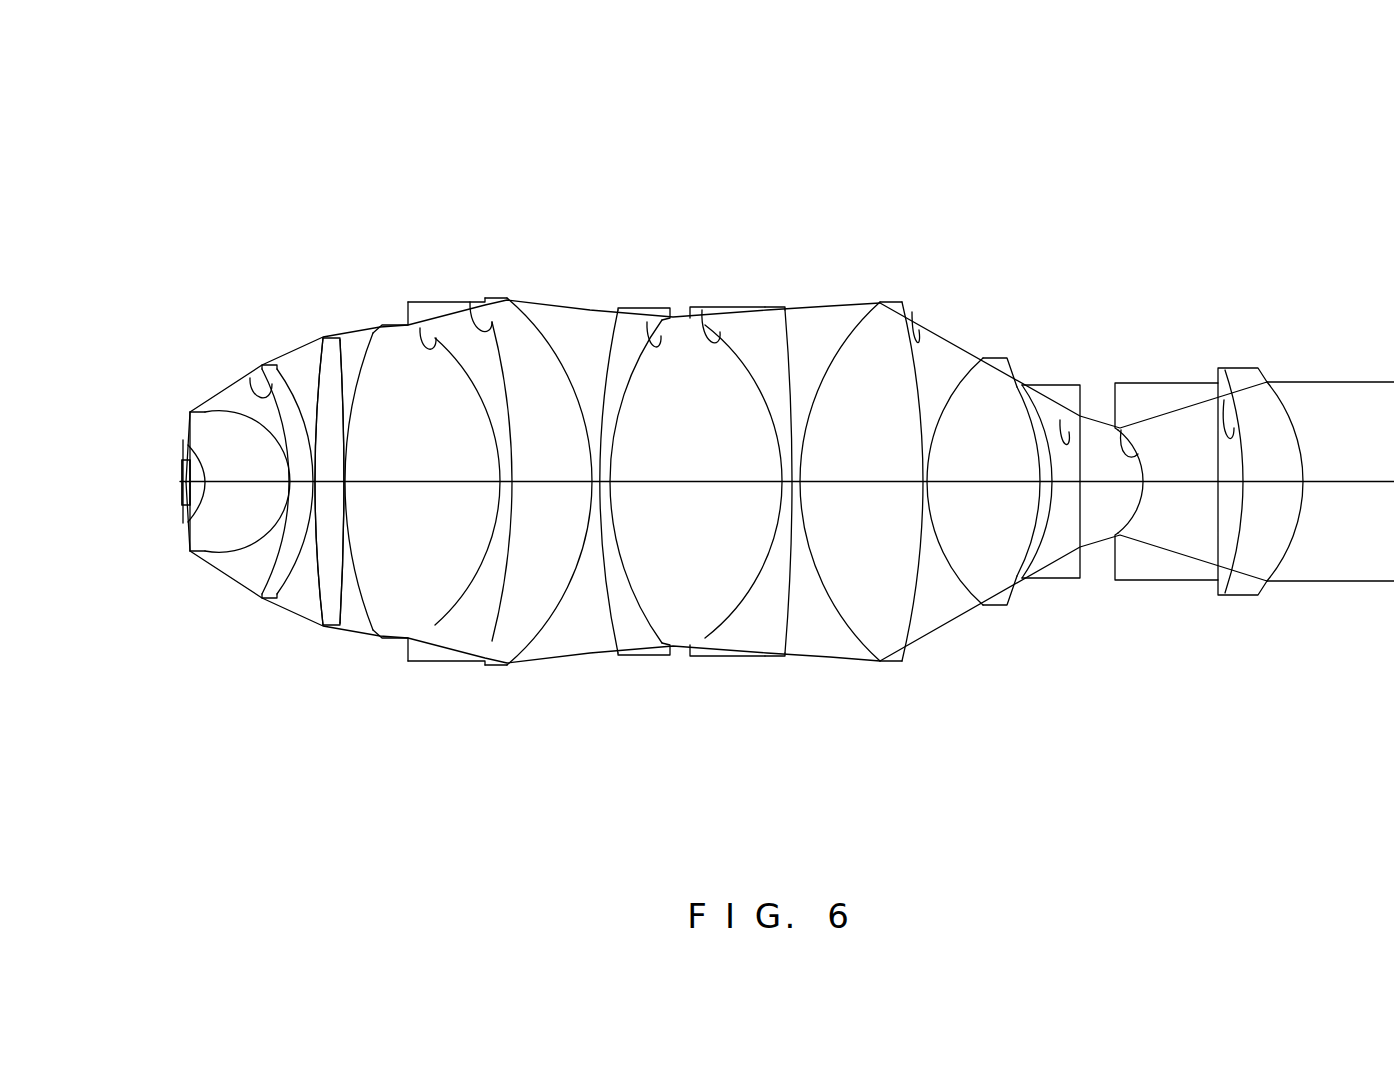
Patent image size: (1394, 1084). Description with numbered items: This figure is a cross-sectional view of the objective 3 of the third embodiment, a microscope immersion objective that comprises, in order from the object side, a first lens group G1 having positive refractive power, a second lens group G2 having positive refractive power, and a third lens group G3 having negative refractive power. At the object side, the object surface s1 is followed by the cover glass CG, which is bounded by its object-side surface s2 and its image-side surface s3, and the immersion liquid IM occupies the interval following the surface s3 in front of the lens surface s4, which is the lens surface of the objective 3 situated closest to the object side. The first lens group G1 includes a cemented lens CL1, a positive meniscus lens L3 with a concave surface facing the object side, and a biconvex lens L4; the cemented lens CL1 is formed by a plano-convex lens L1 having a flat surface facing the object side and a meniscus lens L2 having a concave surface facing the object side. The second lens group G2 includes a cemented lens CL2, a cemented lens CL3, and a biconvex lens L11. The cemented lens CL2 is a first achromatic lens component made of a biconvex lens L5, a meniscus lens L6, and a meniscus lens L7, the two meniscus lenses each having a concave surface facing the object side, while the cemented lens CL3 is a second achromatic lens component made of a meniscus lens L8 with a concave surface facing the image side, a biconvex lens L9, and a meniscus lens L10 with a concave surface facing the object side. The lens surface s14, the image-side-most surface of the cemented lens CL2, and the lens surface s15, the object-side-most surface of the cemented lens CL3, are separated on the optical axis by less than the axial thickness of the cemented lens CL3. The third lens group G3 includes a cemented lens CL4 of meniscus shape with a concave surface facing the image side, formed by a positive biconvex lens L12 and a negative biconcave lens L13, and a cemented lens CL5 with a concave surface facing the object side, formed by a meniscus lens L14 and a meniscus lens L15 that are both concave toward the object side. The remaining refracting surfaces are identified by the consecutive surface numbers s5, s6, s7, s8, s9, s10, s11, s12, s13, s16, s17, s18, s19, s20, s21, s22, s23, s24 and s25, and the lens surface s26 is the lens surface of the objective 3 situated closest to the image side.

The objective 3 is at (750, 450).
The object surface s1 is at (180, 465).
The object-side surface of the cover glass s2 is at (169, 417).
The image-side surface of the cover glass s3 is at (186, 452).
The object-side-most lens surface s4 is at (218, 428).
The surface s5 is at (235, 420).
The surface s6 is at (247, 417).
The surface s7 is at (250, 383).
The surface s8 is at (297, 368).
The surface s9 is at (316, 357).
The surface s10 is at (336, 372).
The surface s11 is at (372, 372).
The surface s12 is at (415, 345).
The surface s13 is at (469, 337).
The lens surface s14 is at (545, 345).
The lens surface s15 is at (612, 365).
The surface s16 is at (658, 340).
The surface s17 is at (703, 338).
The surface s18 is at (782, 357).
The surface s19 is at (836, 360).
The surface s20 is at (917, 325).
The surface s21 is at (958, 380).
The surface s22 is at (1033, 430).
The surface s23 is at (1067, 432).
The lens surface s24 is at (1122, 430).
The surface s25 is at (1227, 432).
The image-side-most lens surface s26 is at (1295, 440).
The cover glass CG is at (186, 508).
The immersion liquid IM is at (186, 508).
The plano-convex lens L1 is at (222, 432).
The meniscus lens L2 is at (260, 419).
The meniscus lens L3 is at (289, 419).
The biconvex lens L4 is at (356, 419).
The biconvex lens L5 is at (422, 432).
The meniscus lens L6 is at (460, 416).
The meniscus lens L7 is at (537, 431).
The meniscus lens L8 is at (605, 435).
The biconvex lens L9 is at (727, 433).
The meniscus lens L10 is at (757, 413).
The biconvex lens L11 is at (858, 426).
The biconvex lens L12 is at (983, 436).
The biconcave lens L13 is at (1052, 459).
The meniscus lens L14 is at (1172, 458).
The meniscus lens L15 is at (1271, 464).
The cemented lens CL1 is at (233, 445).
The cemented lens CL2 is at (468, 442).
The cemented lens CL3 is at (666, 440).
The cemented lens CL4 is at (1013, 463).
The cemented lens CL5 is at (1212, 484).
The first lens group G1 is at (277, 482).
The second lens group G2 is at (642, 476).
The third lens group G3 is at (1125, 499).